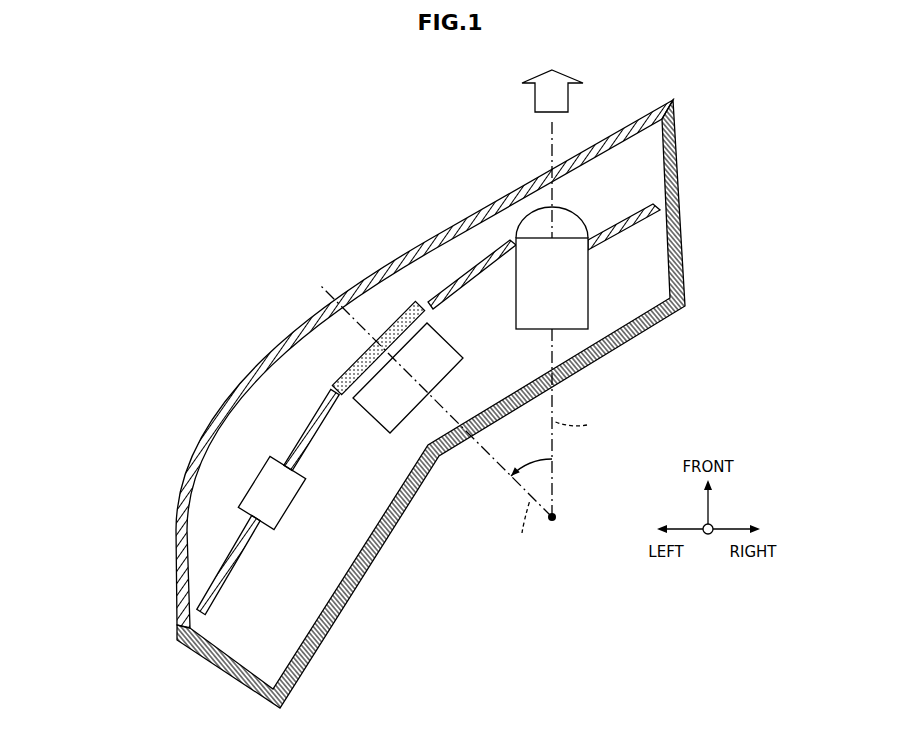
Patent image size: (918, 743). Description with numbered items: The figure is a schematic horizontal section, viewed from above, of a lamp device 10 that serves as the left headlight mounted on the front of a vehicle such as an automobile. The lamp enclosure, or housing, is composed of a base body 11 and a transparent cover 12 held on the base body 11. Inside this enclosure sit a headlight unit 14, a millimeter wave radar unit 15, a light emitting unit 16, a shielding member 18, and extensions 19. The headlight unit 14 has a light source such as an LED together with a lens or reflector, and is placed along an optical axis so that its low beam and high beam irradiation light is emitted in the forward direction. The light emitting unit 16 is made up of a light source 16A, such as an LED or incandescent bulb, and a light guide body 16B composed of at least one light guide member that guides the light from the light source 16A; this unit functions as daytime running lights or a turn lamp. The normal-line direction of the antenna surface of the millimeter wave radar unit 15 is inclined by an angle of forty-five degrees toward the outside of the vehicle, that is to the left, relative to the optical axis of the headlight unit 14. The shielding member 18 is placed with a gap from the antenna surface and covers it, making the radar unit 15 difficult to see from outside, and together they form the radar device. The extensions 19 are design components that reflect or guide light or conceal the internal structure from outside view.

The lamp device 10 is at (343, 162).
The base body 11 is at (370, 563).
The transparent cover 12 is at (422, 243).
The headlight unit 14 is at (590, 303).
The millimeter wave radar unit 15 is at (413, 412).
The light emitting unit 16 is at (174, 337).
The light source 16A is at (254, 481).
The light guide body 16B is at (295, 443).
The shielding member 18 is at (348, 369).
The extension 19 is at (480, 264).